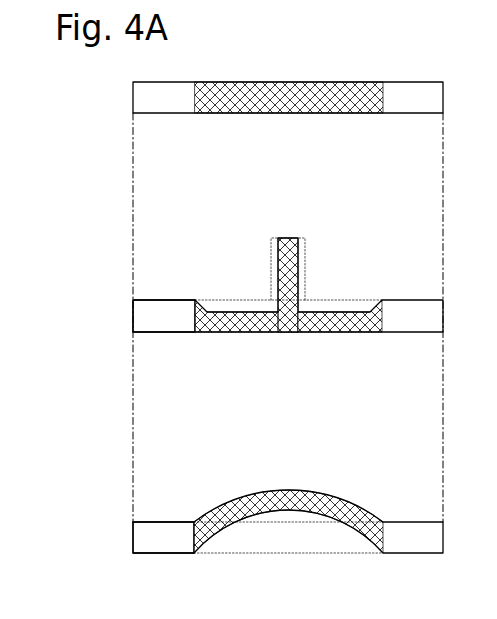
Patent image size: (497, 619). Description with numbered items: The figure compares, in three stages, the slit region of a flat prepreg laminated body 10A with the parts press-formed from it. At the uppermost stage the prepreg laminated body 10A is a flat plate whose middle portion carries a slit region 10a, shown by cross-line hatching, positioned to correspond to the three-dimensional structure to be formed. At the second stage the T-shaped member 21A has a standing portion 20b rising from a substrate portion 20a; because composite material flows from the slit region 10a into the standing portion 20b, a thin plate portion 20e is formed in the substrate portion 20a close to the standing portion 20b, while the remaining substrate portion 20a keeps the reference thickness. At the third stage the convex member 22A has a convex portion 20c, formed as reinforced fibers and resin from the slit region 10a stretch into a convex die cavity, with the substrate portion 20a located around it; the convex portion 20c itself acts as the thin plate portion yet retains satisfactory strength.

The prepreg laminated body 10A is at (150, 110).
The slit region 10a is at (292, 116).
The substrate portion 20a is at (170, 302).
The thin plate portion 20e is at (244, 311).
The standing portion 20b is at (288, 238).
The T-shaped member 21A is at (288, 267).
The convex portion 20c is at (287, 492).
The convex member 22A is at (288, 491).